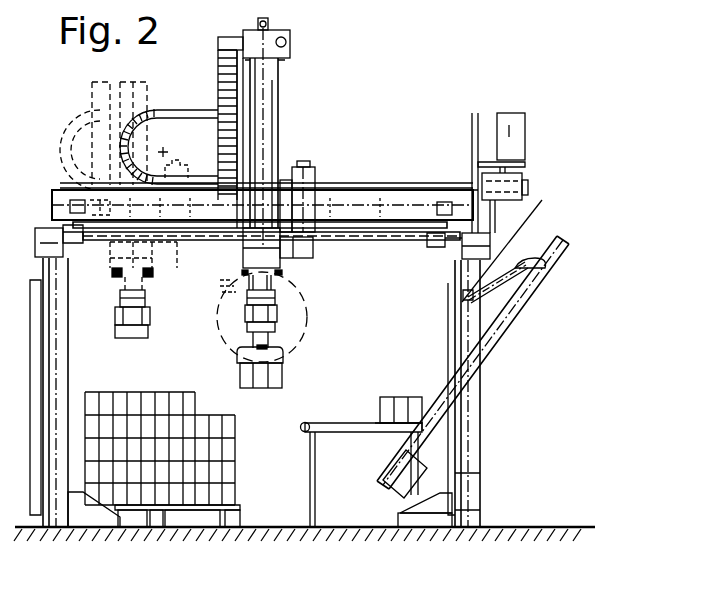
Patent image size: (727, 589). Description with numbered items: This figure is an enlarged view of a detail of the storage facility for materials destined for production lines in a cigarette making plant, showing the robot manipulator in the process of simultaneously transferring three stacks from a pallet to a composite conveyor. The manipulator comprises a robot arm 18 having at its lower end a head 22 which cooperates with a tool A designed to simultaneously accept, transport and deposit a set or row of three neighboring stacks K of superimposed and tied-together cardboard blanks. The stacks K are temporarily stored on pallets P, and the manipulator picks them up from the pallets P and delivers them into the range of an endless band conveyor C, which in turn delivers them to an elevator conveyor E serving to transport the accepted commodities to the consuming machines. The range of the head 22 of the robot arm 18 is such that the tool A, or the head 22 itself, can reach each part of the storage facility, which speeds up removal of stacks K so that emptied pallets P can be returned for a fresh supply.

The robot arm 18 is at (284, 129).
The head 22 is at (282, 308).
The tool A is at (215, 328).
The stacks K is at (175, 388).
The pallets P is at (236, 502).
The band conveyor C is at (366, 432).
The elevator conveyor E is at (522, 304).